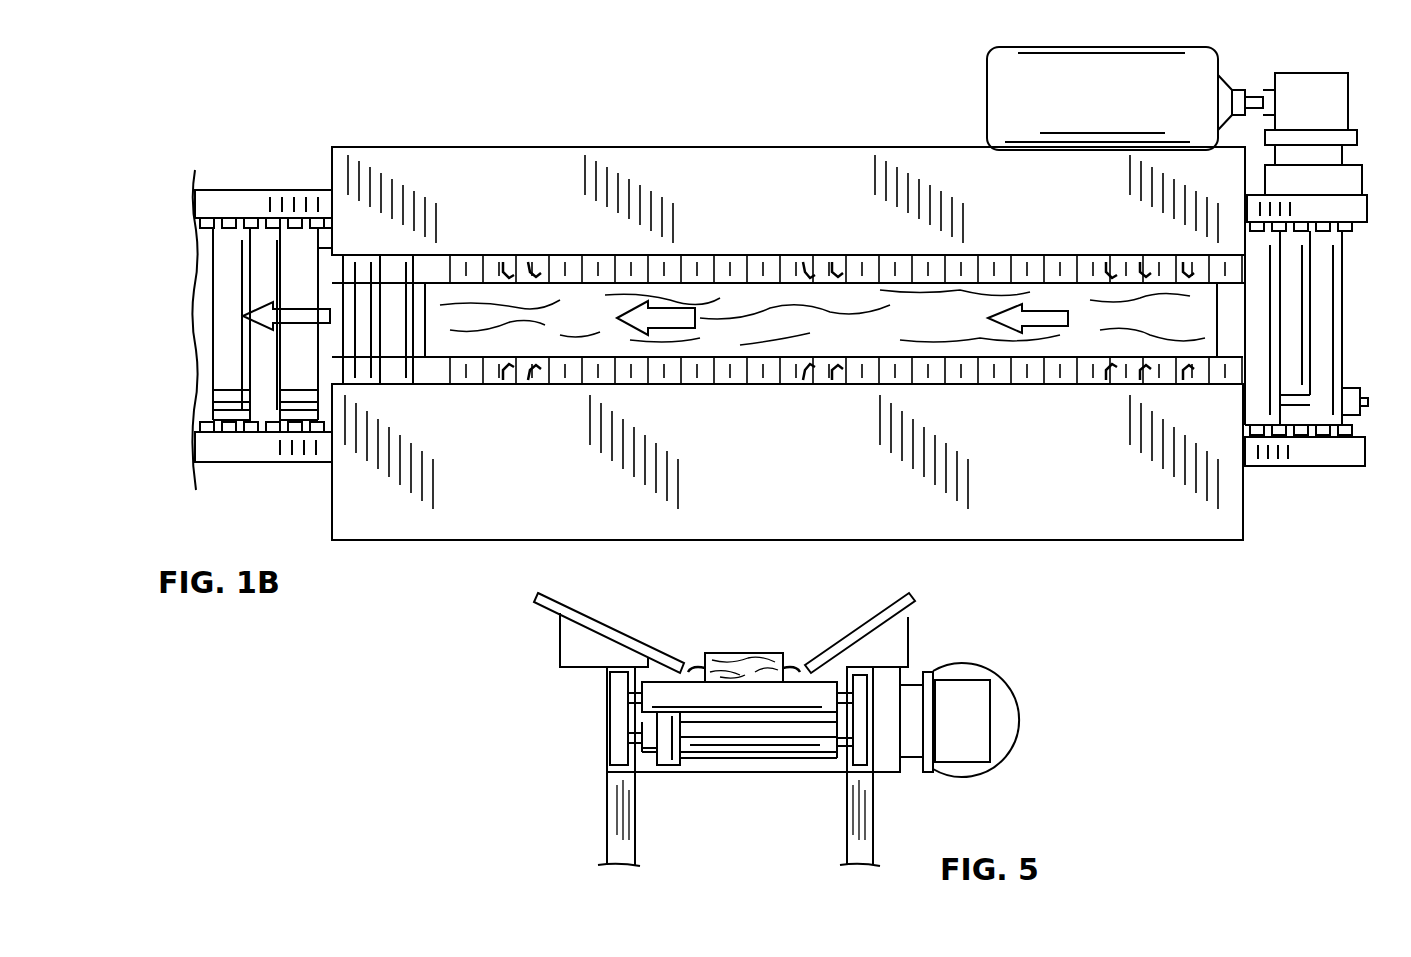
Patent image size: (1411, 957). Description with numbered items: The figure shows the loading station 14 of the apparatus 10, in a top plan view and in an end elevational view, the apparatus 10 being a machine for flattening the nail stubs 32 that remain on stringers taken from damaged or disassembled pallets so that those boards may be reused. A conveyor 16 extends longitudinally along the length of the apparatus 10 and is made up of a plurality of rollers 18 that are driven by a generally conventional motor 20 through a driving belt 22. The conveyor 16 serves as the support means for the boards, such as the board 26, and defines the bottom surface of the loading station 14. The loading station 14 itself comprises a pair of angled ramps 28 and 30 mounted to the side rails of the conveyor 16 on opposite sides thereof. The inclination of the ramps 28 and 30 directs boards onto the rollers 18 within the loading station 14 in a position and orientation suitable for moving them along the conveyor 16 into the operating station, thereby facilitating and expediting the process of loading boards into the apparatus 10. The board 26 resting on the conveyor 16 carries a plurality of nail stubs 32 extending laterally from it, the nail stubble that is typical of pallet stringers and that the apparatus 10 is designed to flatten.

In FIG. 1B, the apparatus 10 is at (1177, 545).
In FIG. 1B, the loading station 14 is at (348, 538).
In FIG. 5, the loading station 14 is at (906, 620).
In FIG. 1B, the conveyor 16 is at (283, 192).
In FIG. 5, the conveyor 16 is at (892, 683).
In FIG. 1B, the rollers 18 is at (222, 233).
In FIG. 5, the rollers 18 is at (648, 730).
In FIG. 1B, the motor 20 is at (1000, 98).
In FIG. 5, the motor 20 is at (1005, 722).
In FIG. 1B, the driving belt 22 is at (1366, 400).
In FIG. 5, the driving belt 22 is at (668, 750).
In FIG. 1B, the board 26 is at (920, 296).
In FIG. 5, the board 26 is at (740, 663).
In FIG. 1B, the angled ramp 28 is at (487, 524).
In FIG. 5, the angled ramp 28 is at (593, 622).
In FIG. 1B, the angled ramp 30 is at (746, 165).
In FIG. 5, the angled ramp 30 is at (860, 632).
In FIG. 1B, the nail stubs 32 is at (530, 262).